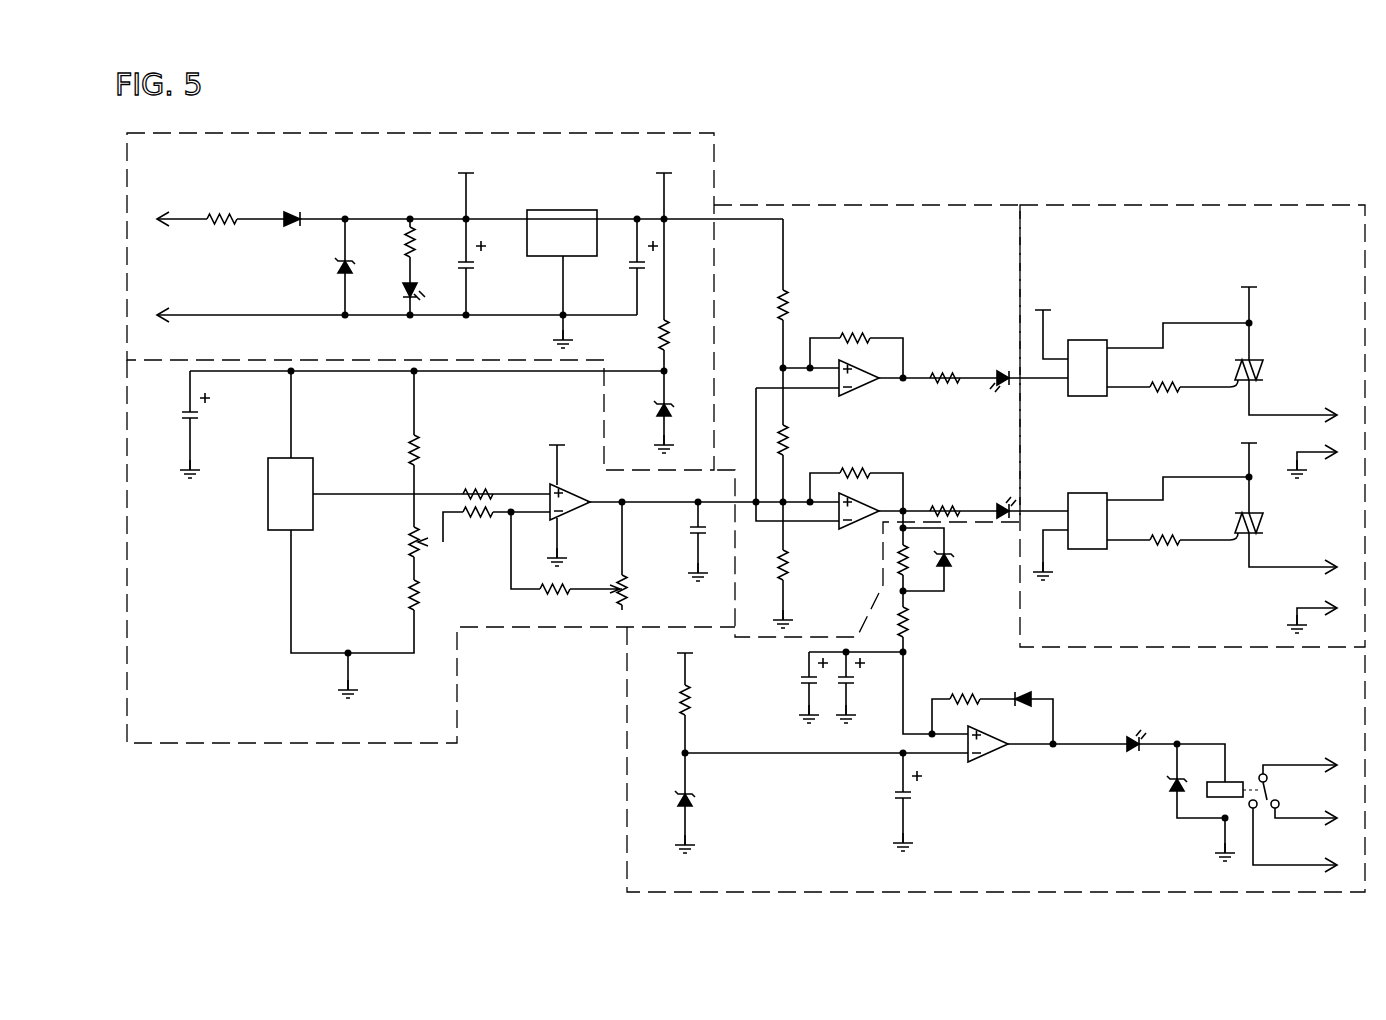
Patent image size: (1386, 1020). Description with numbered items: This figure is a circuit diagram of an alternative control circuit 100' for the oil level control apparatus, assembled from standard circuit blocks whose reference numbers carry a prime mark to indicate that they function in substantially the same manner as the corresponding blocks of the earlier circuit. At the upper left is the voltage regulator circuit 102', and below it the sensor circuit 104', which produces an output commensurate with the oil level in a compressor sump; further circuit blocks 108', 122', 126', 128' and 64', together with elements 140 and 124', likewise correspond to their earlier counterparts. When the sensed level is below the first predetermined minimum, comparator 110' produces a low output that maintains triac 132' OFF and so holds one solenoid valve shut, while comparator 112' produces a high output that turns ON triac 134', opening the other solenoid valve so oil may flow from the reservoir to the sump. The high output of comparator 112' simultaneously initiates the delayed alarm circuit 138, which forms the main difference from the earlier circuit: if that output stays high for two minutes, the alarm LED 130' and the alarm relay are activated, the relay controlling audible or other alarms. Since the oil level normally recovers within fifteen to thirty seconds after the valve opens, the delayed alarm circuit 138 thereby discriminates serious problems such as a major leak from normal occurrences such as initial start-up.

The alternative control circuit 100' is at (746, 482).
The voltage regulator circuit 102' is at (455, 271).
The sensor circuit 104' is at (441, 586).
The comparator circuit 108' is at (891, 393).
The comparator 110' is at (862, 316).
The comparator 112' is at (884, 466).
The triac output circuit 122' is at (1192, 382).
The first optocoupler IC3 126' is at (1117, 315).
The second optocoupler IC4 128' is at (1117, 475).
The triac 132' is at (1288, 346).
The triac 134' is at (1298, 505).
The timer IC2 64' is at (263, 525).
The delayed alarm circuit 138 is at (627, 852).
The comparator amplifier 140 is at (992, 763).
The alarm LED 130' is at (1187, 710).
The relay 124' is at (1272, 776).